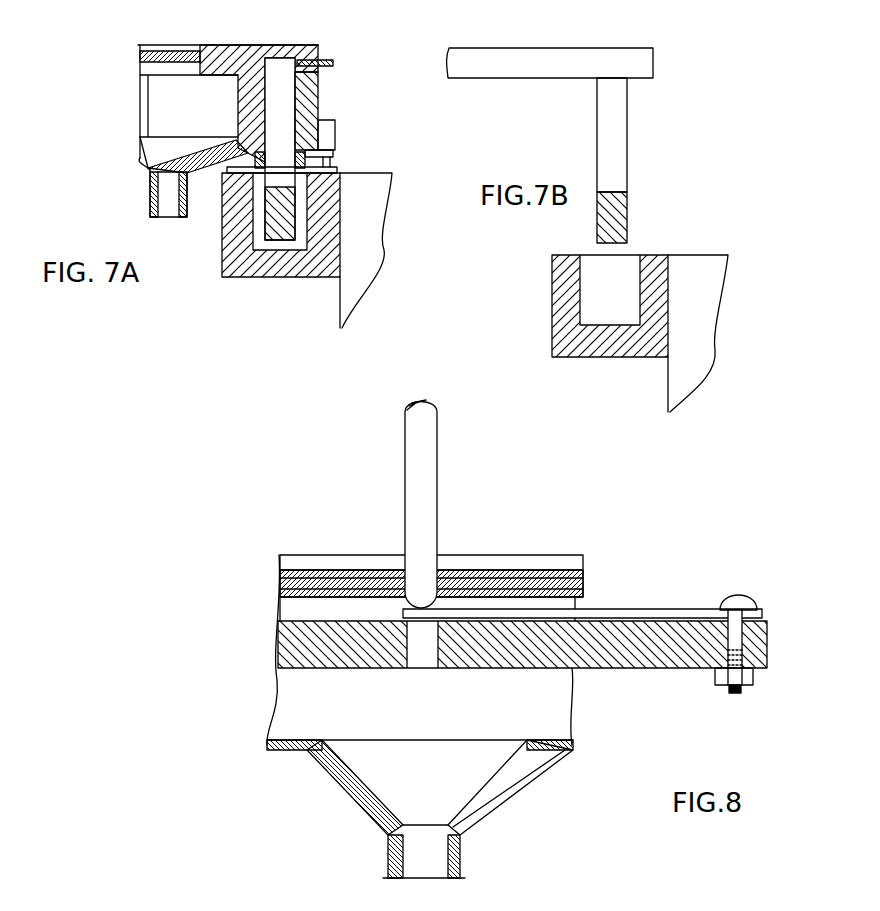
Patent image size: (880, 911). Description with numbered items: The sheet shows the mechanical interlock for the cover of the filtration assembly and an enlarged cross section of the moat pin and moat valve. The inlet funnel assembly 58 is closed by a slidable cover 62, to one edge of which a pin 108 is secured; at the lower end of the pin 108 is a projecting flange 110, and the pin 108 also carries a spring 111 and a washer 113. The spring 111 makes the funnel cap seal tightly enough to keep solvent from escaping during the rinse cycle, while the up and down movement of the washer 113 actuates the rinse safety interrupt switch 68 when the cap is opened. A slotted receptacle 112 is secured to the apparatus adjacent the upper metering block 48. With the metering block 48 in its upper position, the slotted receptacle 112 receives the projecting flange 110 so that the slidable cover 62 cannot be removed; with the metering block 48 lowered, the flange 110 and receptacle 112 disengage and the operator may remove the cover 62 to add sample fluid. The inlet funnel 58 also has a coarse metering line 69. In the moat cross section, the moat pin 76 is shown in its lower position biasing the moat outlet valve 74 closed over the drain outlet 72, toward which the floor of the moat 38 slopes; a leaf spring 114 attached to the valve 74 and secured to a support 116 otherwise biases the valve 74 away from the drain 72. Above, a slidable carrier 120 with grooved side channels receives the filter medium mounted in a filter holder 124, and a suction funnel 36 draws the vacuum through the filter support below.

In FIG. 8, the suction funnel 36 is at (457, 795).
In FIG. 8, the in-processing fluid holding tank 38 is at (643, 592).
In FIG. 7A, the metering block 48 is at (362, 253).
In FIG. 7B, the metering block 48 is at (700, 291).
In FIG. 7A, the inlet funnel assembly 58 is at (140, 167).
In FIG. 7A, the slidable cover 62 is at (240, 56).
In FIG. 7B, the slidable cover 62 is at (567, 62).
In FIG. 7A, the rinse safety interrupt switch 68 is at (330, 134).
In FIG. 7A, the coarse metering line 69 is at (150, 131).
In FIG. 8, the drain outlet 72 is at (427, 650).
In FIG. 8, the moat outlet valve 74 is at (418, 622).
In FIG. 8, the moat pin 76 is at (418, 465).
In FIG. 7A, the pin 108 is at (280, 128).
In FIG. 7B, the pin 108 is at (612, 126).
In FIG. 7A, the projecting flange 110 is at (280, 203).
In FIG. 7B, the projecting flange 110 is at (615, 212).
In FIG. 7A, the spring 111 is at (288, 78).
In FIG. 7A, the slotted receptacle 112 is at (237, 240).
In FIG. 7B, the slotted receptacle 112 is at (555, 282).
In FIG. 7A, the washer 113 is at (236, 146).
In FIG. 8, the leaf spring 114 is at (682, 609).
In FIG. 8, the support 116 is at (742, 598).
In FIG. 8, the slidable carrier 120 is at (278, 578).
In FIG. 8, the filter holder 124 is at (580, 583).